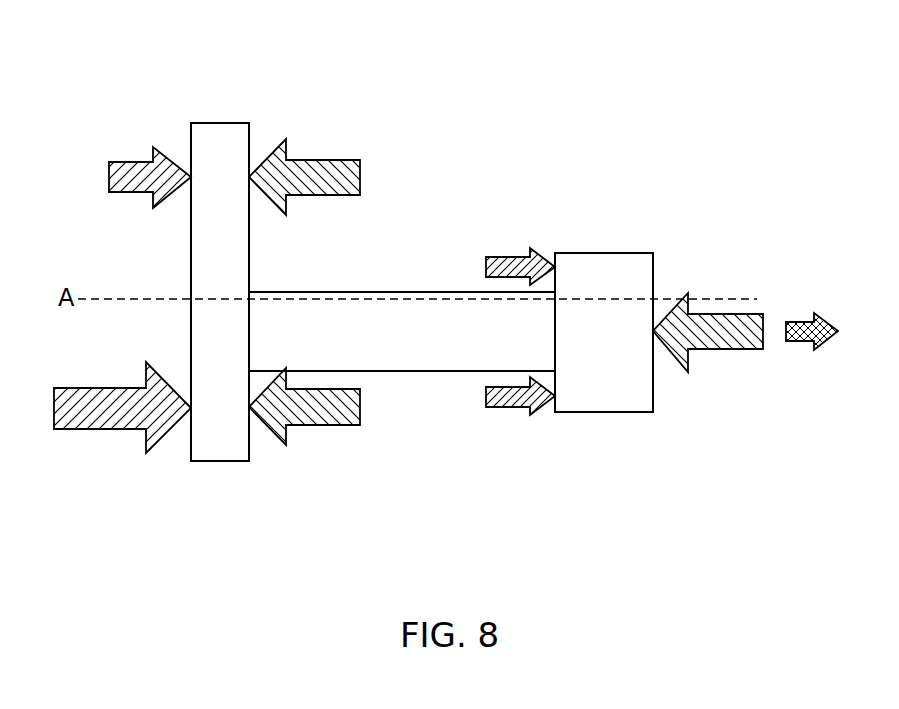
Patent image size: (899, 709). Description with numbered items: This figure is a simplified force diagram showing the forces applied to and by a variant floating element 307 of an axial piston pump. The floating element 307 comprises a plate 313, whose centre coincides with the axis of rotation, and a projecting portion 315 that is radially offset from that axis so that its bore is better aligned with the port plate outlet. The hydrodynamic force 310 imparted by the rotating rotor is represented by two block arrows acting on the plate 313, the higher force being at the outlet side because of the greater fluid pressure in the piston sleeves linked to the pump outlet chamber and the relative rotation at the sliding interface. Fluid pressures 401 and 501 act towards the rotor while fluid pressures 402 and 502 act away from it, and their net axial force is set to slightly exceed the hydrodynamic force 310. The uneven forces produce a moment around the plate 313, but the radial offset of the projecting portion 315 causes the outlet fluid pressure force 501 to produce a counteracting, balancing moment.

The floating element 307 is at (468, 102).
The hydrodynamic force 310 is at (108, 178).
The plate 313 is at (210, 447).
The projecting portion 315 is at (400, 360).
The fluid pressure 401 is at (320, 160).
The fluid pressure 402 is at (512, 256).
The force 501 is at (726, 314).
The fluid pressure 502 is at (800, 320).